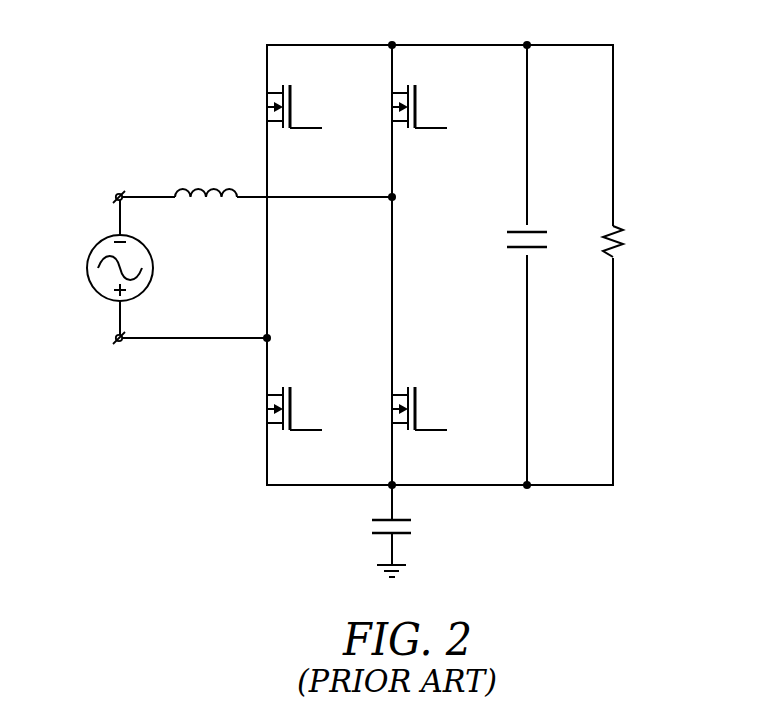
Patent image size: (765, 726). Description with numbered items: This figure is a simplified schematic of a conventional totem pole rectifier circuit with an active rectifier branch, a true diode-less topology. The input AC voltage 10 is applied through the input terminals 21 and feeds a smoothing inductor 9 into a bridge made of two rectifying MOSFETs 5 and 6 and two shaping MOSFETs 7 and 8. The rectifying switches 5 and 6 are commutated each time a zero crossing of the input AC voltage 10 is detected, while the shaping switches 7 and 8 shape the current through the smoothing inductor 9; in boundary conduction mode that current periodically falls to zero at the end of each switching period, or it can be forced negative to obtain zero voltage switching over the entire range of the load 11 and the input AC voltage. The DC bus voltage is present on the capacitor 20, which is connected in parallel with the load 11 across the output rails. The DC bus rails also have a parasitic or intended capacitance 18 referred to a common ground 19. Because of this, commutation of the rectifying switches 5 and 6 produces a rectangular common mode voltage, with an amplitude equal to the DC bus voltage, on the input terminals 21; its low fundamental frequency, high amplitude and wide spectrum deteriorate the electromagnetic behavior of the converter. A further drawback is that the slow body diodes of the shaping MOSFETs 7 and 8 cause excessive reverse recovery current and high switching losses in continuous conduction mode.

The rectifying MOSFET 5 is at (313, 87).
The rectifying MOSFET 6 is at (301, 394).
The shaping MOSFET 7 is at (431, 87).
The shaping MOSFET 8 is at (428, 394).
The smoothing inductor 9 is at (208, 176).
The input AC voltage 10 is at (155, 292).
The load 11 is at (629, 226).
The capacitance 18 is at (420, 526).
The common ground 19 is at (374, 578).
The capacitor 20 is at (513, 226).
The input terminals 21 is at (118, 189).